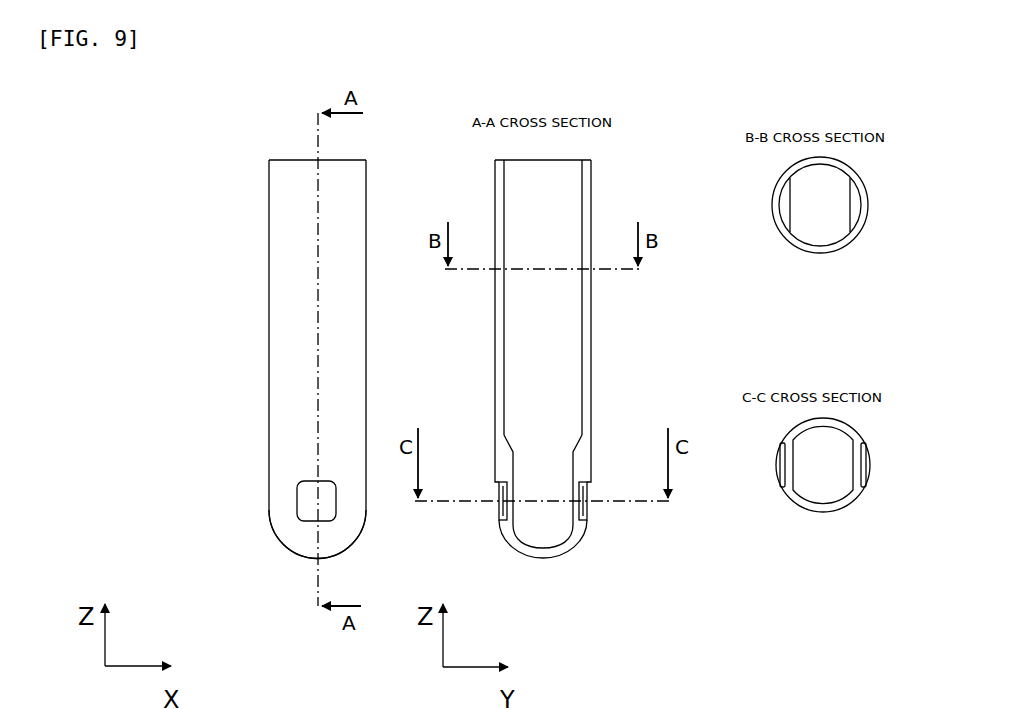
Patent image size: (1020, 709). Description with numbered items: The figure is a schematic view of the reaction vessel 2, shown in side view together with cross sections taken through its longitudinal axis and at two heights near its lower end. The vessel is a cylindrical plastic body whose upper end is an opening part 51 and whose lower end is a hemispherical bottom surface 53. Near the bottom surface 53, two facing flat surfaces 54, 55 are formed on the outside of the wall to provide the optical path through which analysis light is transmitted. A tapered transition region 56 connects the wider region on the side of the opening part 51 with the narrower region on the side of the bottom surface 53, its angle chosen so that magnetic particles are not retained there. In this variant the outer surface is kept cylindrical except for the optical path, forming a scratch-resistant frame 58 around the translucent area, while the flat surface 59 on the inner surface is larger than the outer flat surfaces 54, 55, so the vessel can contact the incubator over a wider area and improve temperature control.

The reaction vessel 2 is at (292, 352).
The opening part 51 is at (345, 160).
The bottom surface 53 is at (283, 548).
The flat surface 54 is at (500, 510).
The flat surface 55 is at (587, 512).
The transition region 56 is at (510, 445).
The scratch-resistant frame 58 is at (588, 467).
The flat surface on inner surface 59 is at (570, 495).